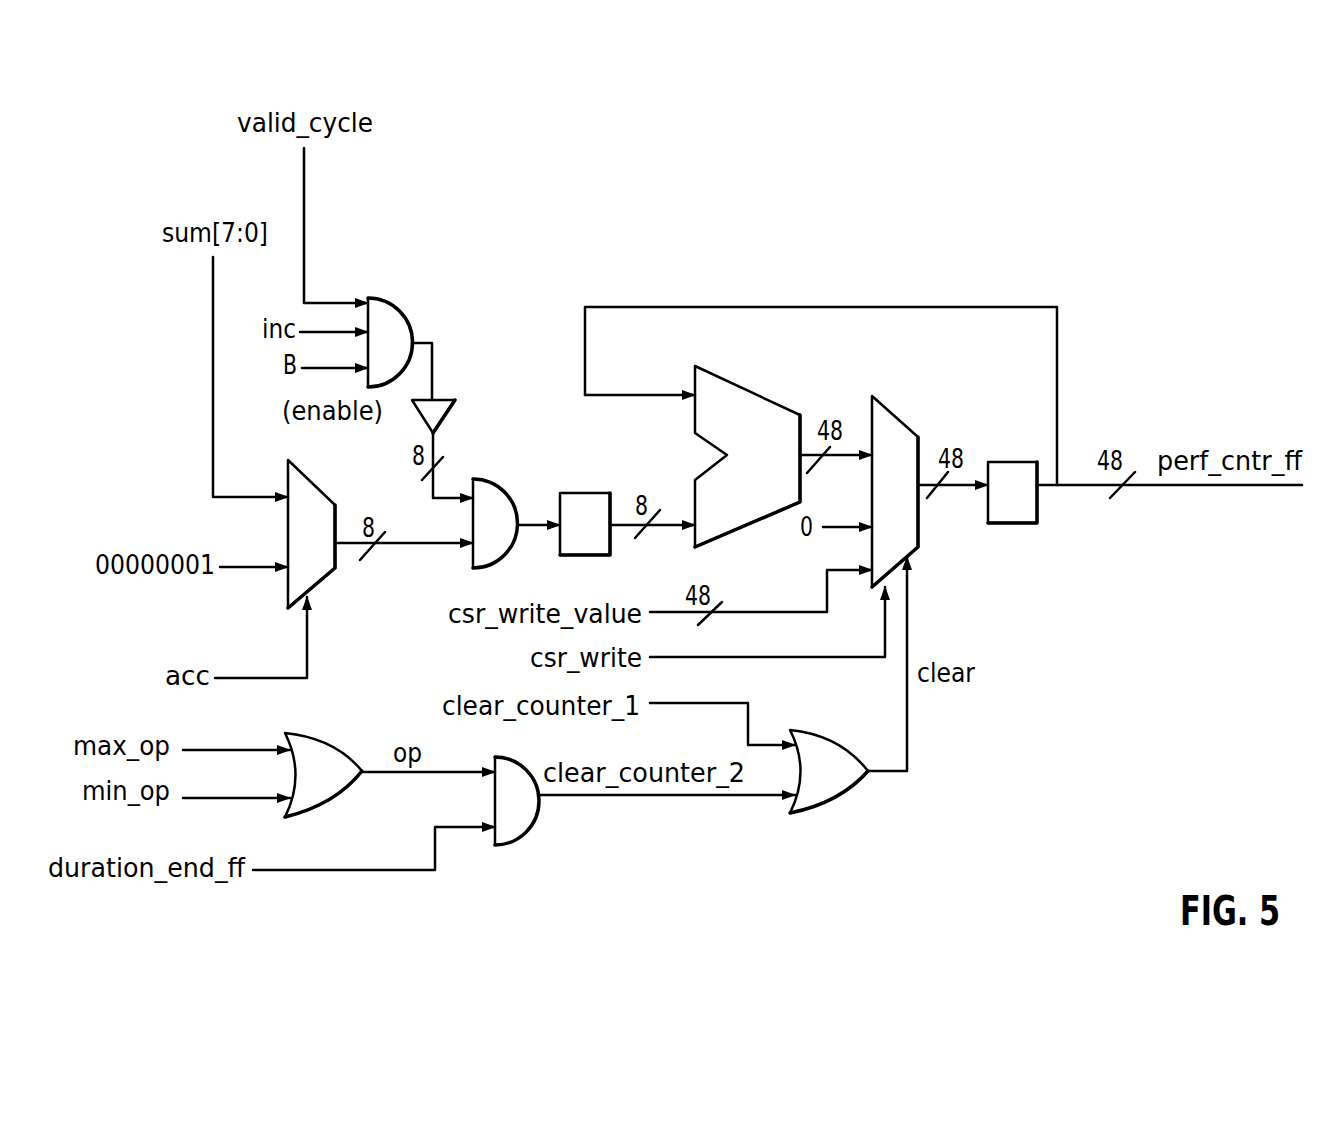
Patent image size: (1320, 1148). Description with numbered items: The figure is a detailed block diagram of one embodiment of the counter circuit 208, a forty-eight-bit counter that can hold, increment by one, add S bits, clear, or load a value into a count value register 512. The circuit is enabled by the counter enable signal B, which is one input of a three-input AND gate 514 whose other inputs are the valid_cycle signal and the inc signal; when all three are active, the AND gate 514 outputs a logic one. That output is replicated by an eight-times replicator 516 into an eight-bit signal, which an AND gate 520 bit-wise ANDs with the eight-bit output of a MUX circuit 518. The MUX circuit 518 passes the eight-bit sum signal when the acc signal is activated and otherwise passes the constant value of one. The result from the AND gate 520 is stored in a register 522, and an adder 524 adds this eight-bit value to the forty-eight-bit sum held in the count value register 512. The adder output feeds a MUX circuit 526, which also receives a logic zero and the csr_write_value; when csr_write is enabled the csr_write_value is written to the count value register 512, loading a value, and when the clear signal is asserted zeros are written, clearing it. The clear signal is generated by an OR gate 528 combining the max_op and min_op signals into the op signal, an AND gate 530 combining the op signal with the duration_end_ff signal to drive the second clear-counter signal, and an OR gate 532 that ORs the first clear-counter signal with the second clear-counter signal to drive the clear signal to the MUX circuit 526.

The counter circuit 208 is at (920, 187).
The count value register 512 is at (1007, 527).
The three-input AND gate 514 is at (383, 298).
The 8x replicator 516 is at (458, 398).
The MUX circuit 518 is at (295, 468).
The AND gate 520 is at (487, 479).
The register 522 is at (563, 510).
The adder 524 is at (742, 386).
The MUX circuit 526 is at (888, 408).
The OR gate 528 is at (312, 813).
The AND gate 530 is at (517, 845).
The OR gate 532 is at (837, 803).